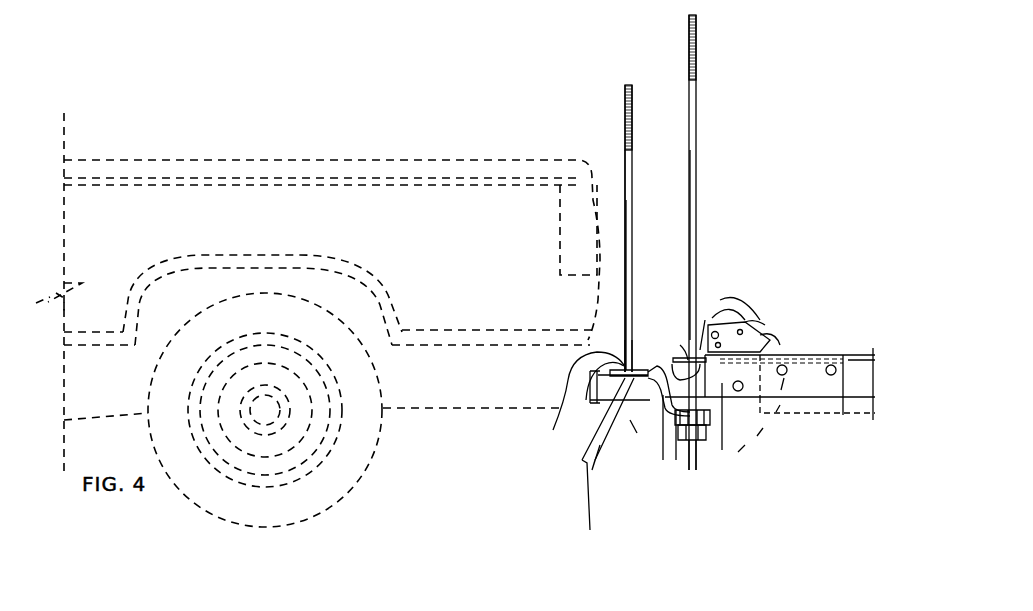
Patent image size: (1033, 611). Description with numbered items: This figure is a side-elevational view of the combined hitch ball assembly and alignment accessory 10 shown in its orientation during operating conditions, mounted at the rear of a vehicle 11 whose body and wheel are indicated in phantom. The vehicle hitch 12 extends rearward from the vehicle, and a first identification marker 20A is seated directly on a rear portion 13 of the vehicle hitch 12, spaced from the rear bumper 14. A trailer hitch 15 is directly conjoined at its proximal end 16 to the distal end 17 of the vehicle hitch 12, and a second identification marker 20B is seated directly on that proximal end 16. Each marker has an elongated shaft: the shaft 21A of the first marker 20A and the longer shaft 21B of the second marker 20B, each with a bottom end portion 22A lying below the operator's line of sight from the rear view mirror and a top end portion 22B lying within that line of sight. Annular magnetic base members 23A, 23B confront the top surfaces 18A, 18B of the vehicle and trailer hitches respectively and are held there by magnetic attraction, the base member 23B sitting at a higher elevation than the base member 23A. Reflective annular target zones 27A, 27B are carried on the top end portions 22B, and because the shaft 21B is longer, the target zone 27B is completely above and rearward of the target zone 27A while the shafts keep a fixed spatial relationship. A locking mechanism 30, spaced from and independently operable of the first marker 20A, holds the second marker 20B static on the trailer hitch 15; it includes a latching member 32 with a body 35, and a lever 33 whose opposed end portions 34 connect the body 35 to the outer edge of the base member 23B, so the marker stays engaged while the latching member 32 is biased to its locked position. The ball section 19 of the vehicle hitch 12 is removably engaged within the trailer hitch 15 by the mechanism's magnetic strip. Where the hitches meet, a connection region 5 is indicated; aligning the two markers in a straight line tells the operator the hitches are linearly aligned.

The vehicle hitch receiver connection 5 is at (735, 448).
The assembly 10 is at (523, 82).
The vehicle 11 is at (368, 172).
The vehicle hitch 12 is at (607, 430).
The rear portion of the vehicle hitch 13 is at (650, 445).
The rear bumper 14 is at (596, 340).
The trailer hitch 15 is at (830, 352).
The proximal end of the trailer hitch 16 is at (720, 450).
The distal end of the vehicle hitch 17 is at (676, 460).
The top surface of the vehicle hitch 18A is at (608, 473).
The top surface of the trailer hitch 18B is at (703, 440).
The ball section 19 is at (688, 450).
The first identification marker 20A is at (620, 217).
The second identification marker 20B is at (643, 312).
The shaft of the first identification marker 21A is at (633, 227).
The shaft of the second identification marker 21B is at (697, 146).
The bottom end portion 22A is at (600, 402).
The top end portion 22B is at (622, 160).
The base member of the first identification marker 23A is at (605, 442).
The base member of the second identification marker 23B is at (681, 345).
The target zone of the first identification marker 27A is at (622, 100).
The target zone of the second identification marker 27B is at (698, 42).
The locking mechanism 30 is at (756, 306).
The latching member 32 is at (738, 310).
The lever 33 is at (805, 326).
The opposed end portions of the lever 34 is at (706, 320).
The body of the latching member 35 is at (755, 318).